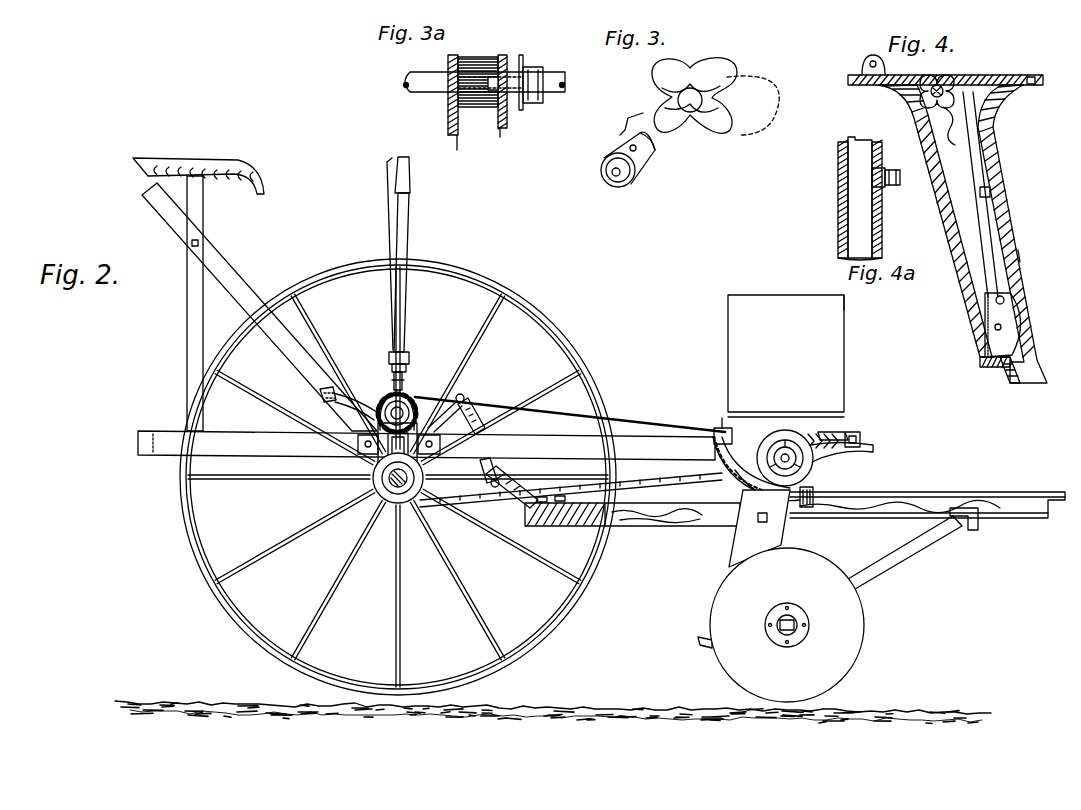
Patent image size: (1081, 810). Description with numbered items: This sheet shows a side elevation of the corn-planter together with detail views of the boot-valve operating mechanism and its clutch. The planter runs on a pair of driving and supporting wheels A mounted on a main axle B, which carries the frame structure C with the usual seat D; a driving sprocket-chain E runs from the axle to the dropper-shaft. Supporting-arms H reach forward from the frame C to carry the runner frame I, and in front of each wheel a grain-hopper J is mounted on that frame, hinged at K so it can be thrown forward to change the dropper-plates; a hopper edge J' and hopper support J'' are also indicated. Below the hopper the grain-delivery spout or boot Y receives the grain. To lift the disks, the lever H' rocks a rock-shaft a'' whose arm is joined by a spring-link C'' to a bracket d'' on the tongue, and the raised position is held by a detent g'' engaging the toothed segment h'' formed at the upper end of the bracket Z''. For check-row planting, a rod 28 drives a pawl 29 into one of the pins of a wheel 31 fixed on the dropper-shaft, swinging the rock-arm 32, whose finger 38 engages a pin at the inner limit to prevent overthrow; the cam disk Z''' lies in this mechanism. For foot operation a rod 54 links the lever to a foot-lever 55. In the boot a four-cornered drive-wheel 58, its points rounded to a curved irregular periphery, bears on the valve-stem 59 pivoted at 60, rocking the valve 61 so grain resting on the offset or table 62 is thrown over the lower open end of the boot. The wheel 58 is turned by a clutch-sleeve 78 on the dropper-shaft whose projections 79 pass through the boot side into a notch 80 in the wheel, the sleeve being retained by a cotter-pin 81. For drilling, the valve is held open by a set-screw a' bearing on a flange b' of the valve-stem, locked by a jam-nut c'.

In FIG. 2, the driving and supporting wheels A is at (548, 318).
In FIG. 2, the main axle B is at (366, 487).
In FIG. 2, the frame structure C is at (426, 438).
In FIG. 2, the seat D is at (225, 160).
In FIG. 2, the driving sprocket-chain E is at (652, 481).
In FIG. 2, the supporting-arms H is at (753, 486).
In FIG. 2, the lever H' is at (412, 254).
In FIG. 2, the runner frame I is at (814, 494).
In FIG. 2, the grain-hopper J is at (794, 356).
In FIG. 2, the hopper upper edge J' is at (861, 293).
In FIG. 2, the hopper support bar J'' is at (847, 409).
In FIG. 2, the hinge K is at (858, 434).
In FIG. 2, the grain-delivery spout Y is at (737, 535).
In FIG. 4, the grain-delivery spout Y is at (1018, 256).
In FIG. 2, the bracket Z'' is at (370, 429).
In FIG. 2, the cam disk Z''' is at (789, 442).
In FIG. 2, the set-screw a' is at (783, 524).
In FIG. 4A, the set-screw a' is at (903, 173).
In FIG. 2, the rock-shaft a'' is at (446, 397).
In FIG. 4, the flange b' is at (945, 126).
In FIG. 4A, the flange b' is at (845, 197).
In FIG. 4A, the jam-nut c' is at (892, 163).
In FIG. 2, the spring-link C'' is at (481, 442).
In FIG. 2, the bracket d'' is at (525, 485).
In FIG. 2, the detent g'' is at (411, 362).
In FIG. 2, the toothed segment h'' is at (404, 400).
In FIG. 2, the rod 28 is at (727, 434).
In FIG. 2, the pawl 29 is at (757, 432).
In FIG. 2, the wheel 31 is at (815, 452).
In FIG. 2, the rock-arm 32 is at (714, 475).
In FIG. 2, the finger 38 is at (766, 452).
In FIG. 2, the rod 54 is at (681, 420).
In FIG. 2, the foot-lever 55 is at (362, 404).
In FIG. 3A, the four-cornered drive-wheel 58 is at (483, 108).
In FIG. 3, the four-cornered drive-wheel 58 is at (765, 92).
In FIG. 4, the four-cornered drive-wheel 58 is at (949, 80).
In FIG. 4, the valve-stem 59 is at (964, 100).
In FIG. 4A, the valve-stem 59 is at (852, 212).
In FIG. 4, the pivot 60 is at (992, 190).
In FIG. 4, the valve 61 is at (1010, 331).
In FIG. 4, the offset or table 62 is at (1004, 370).
In FIG. 3A, the clutch-sleeve 78 is at (538, 104).
In FIG. 3, the clutch-sleeve 78 is at (640, 170).
In FIG. 3A, the projections 79 is at (511, 110).
In FIG. 3, the projections 79 is at (656, 150).
In FIG. 3A, the notch 80 is at (493, 62).
In FIG. 3, the notch 80 is at (670, 110).
In FIG. 3A, the cotter-pin 81 is at (523, 63).